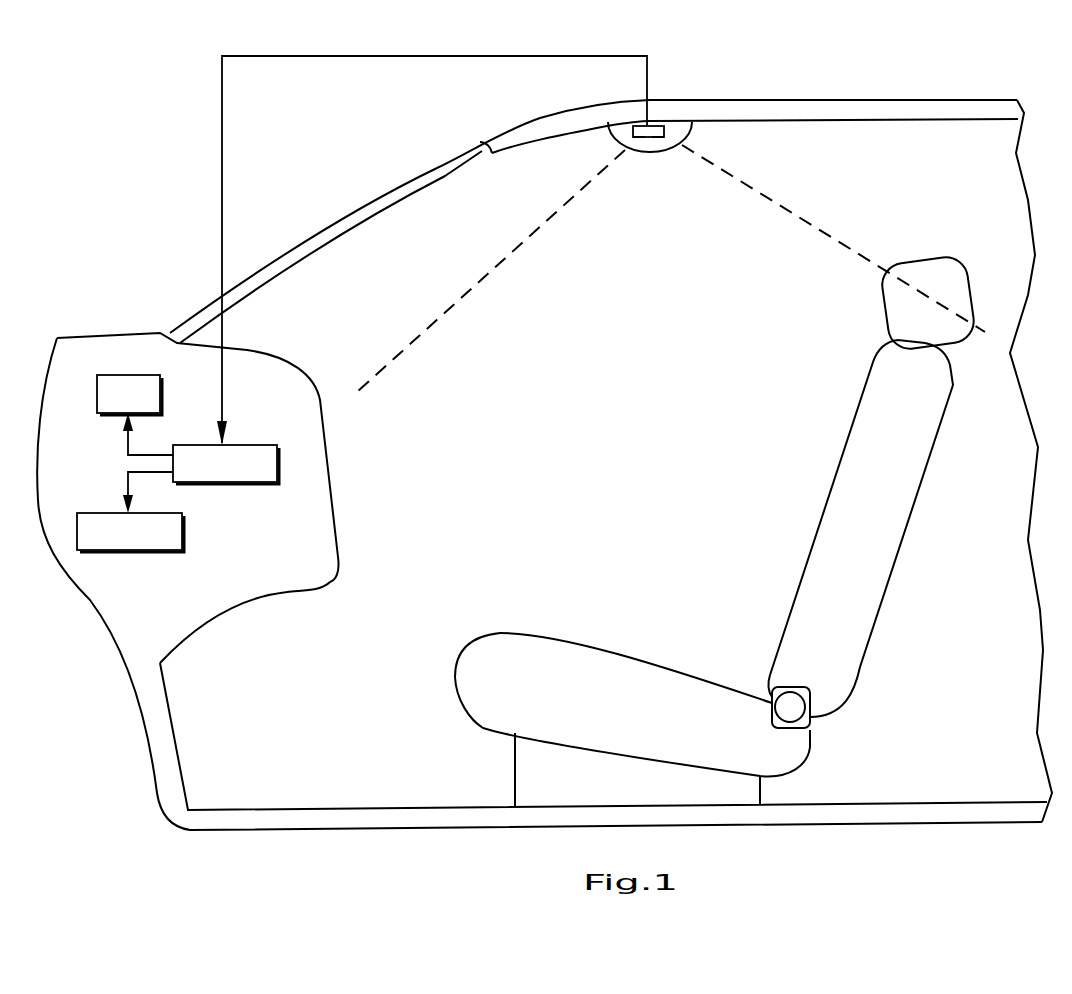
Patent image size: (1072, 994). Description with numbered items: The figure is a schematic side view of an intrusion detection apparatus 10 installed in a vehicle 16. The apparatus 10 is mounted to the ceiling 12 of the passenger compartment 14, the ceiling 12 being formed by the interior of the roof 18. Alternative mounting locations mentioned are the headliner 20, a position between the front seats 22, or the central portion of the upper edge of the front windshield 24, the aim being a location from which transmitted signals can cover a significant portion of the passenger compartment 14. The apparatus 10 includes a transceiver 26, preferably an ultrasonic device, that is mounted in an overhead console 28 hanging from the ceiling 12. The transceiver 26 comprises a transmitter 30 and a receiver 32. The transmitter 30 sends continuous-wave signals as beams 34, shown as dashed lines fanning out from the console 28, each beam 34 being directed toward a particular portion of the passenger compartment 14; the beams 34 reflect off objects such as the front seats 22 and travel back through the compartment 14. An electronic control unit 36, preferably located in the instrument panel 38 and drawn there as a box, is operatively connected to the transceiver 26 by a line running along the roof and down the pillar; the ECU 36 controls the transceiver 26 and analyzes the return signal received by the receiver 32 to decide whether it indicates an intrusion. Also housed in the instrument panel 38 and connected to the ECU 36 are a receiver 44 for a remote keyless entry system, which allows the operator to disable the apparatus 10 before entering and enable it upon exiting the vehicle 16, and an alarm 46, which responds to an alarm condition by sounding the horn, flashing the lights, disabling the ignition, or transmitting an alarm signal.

The intrusion detection apparatus 10 is at (742, 86).
The ceiling 12 is at (790, 120).
The passenger compartment 14 is at (644, 439).
The vehicle 16 is at (850, 100).
The roof 18 is at (568, 117).
The headliner 20 is at (530, 134).
The front seats 22 is at (870, 413).
The front windshield 24 is at (437, 168).
The transceiver 26 is at (650, 168).
The overhead console 28 is at (692, 128).
The transmitter 30 is at (662, 139).
The receiver 32 is at (635, 139).
The beams 34 is at (838, 237).
The electronic control unit (ECU) 36 is at (263, 473).
The instrument panel 38 is at (252, 360).
The receiver for RKE system 44 is at (160, 389).
The alarm 46 is at (178, 545).